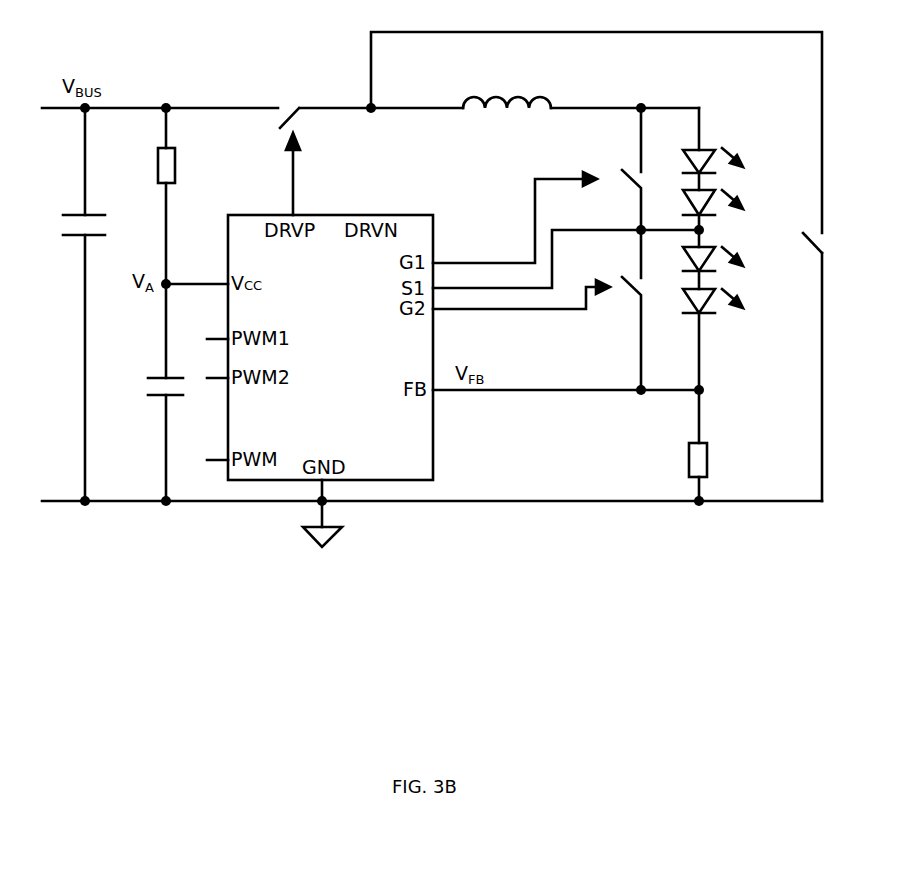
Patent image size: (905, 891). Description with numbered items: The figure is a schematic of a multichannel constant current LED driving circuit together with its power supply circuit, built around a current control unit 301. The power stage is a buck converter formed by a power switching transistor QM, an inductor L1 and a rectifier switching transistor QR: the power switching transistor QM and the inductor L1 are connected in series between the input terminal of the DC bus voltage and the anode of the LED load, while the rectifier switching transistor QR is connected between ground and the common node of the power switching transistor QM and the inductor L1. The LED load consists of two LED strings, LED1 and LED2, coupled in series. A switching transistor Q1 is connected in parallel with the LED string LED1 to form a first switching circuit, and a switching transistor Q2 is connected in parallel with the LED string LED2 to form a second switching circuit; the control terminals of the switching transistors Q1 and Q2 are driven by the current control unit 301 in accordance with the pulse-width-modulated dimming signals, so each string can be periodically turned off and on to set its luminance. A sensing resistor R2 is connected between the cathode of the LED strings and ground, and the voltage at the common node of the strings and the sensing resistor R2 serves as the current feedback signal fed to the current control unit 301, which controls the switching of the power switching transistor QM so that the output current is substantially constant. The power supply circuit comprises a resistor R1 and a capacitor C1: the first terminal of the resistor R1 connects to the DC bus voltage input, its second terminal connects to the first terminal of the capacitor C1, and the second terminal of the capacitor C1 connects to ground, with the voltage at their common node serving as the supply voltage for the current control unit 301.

The current control unit 301 is at (417, 469).
The resistor R1 is at (154, 165).
The capacitor C1 is at (152, 388).
The inductor L1 is at (507, 85).
The sensing resistor R2 is at (714, 460).
The switching transistor Q1 is at (613, 169).
The switching transistor Q2 is at (613, 310).
The LED string LED1 is at (739, 181).
The LED string LED2 is at (739, 280).
The power switching transistor QM is at (288, 101).
The rectifier switching transistor QR is at (826, 244).